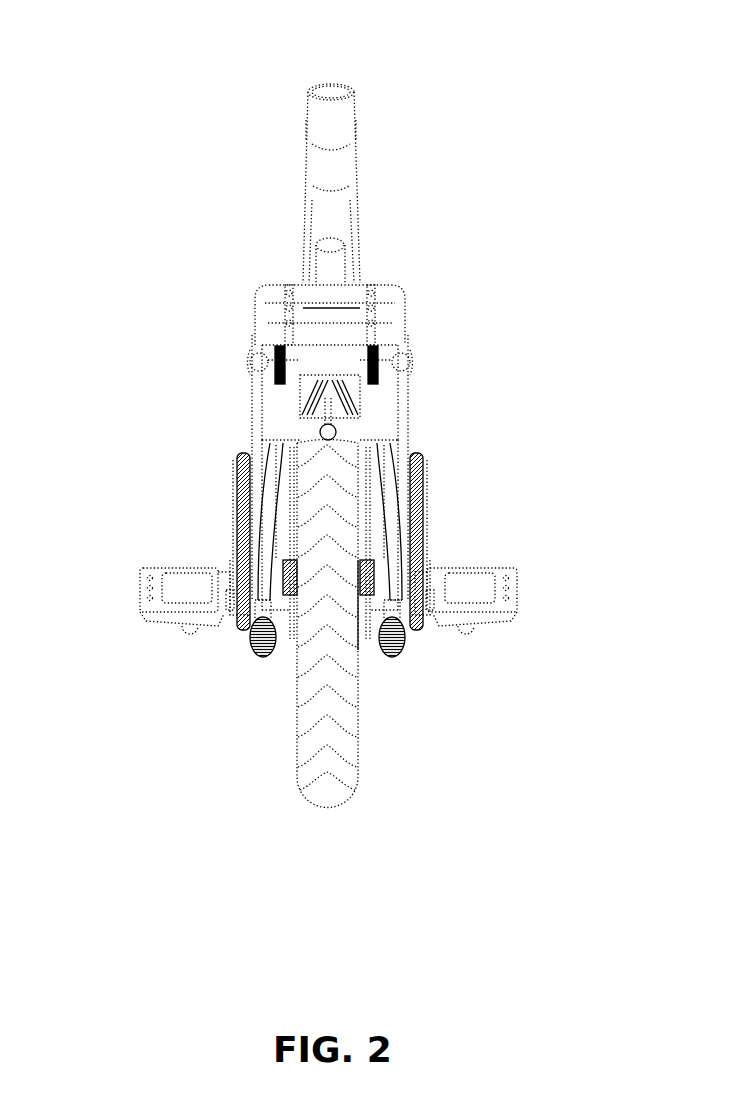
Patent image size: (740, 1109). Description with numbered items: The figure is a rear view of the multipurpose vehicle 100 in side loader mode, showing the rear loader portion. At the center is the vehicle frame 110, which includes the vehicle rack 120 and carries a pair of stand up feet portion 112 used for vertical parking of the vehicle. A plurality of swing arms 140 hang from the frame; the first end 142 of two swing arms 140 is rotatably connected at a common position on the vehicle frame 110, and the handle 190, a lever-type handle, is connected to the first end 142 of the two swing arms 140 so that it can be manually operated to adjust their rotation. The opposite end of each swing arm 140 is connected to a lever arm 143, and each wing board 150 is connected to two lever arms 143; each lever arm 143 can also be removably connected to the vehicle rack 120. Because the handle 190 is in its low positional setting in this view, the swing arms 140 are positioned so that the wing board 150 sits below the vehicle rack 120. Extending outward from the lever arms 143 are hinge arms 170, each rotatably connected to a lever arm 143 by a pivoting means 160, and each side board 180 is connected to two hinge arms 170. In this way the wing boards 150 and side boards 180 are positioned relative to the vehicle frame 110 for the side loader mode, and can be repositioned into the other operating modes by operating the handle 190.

The multipurpose vehicle 100 is at (285, 115).
The vehicle frame 110 is at (333, 212).
The vehicle rack 120 is at (330, 367).
The handle 190 is at (322, 430).
The swing arm 140 is at (275, 455).
The first end 142 is at (336, 428).
The wing board 150 is at (240, 525).
The lever arm 143 is at (240, 595).
The side board 180 is at (182, 590).
The hinge arm 170 is at (198, 627).
The pivoting means 160 is at (237, 633).
The stand up feet portion 112 is at (263, 657).